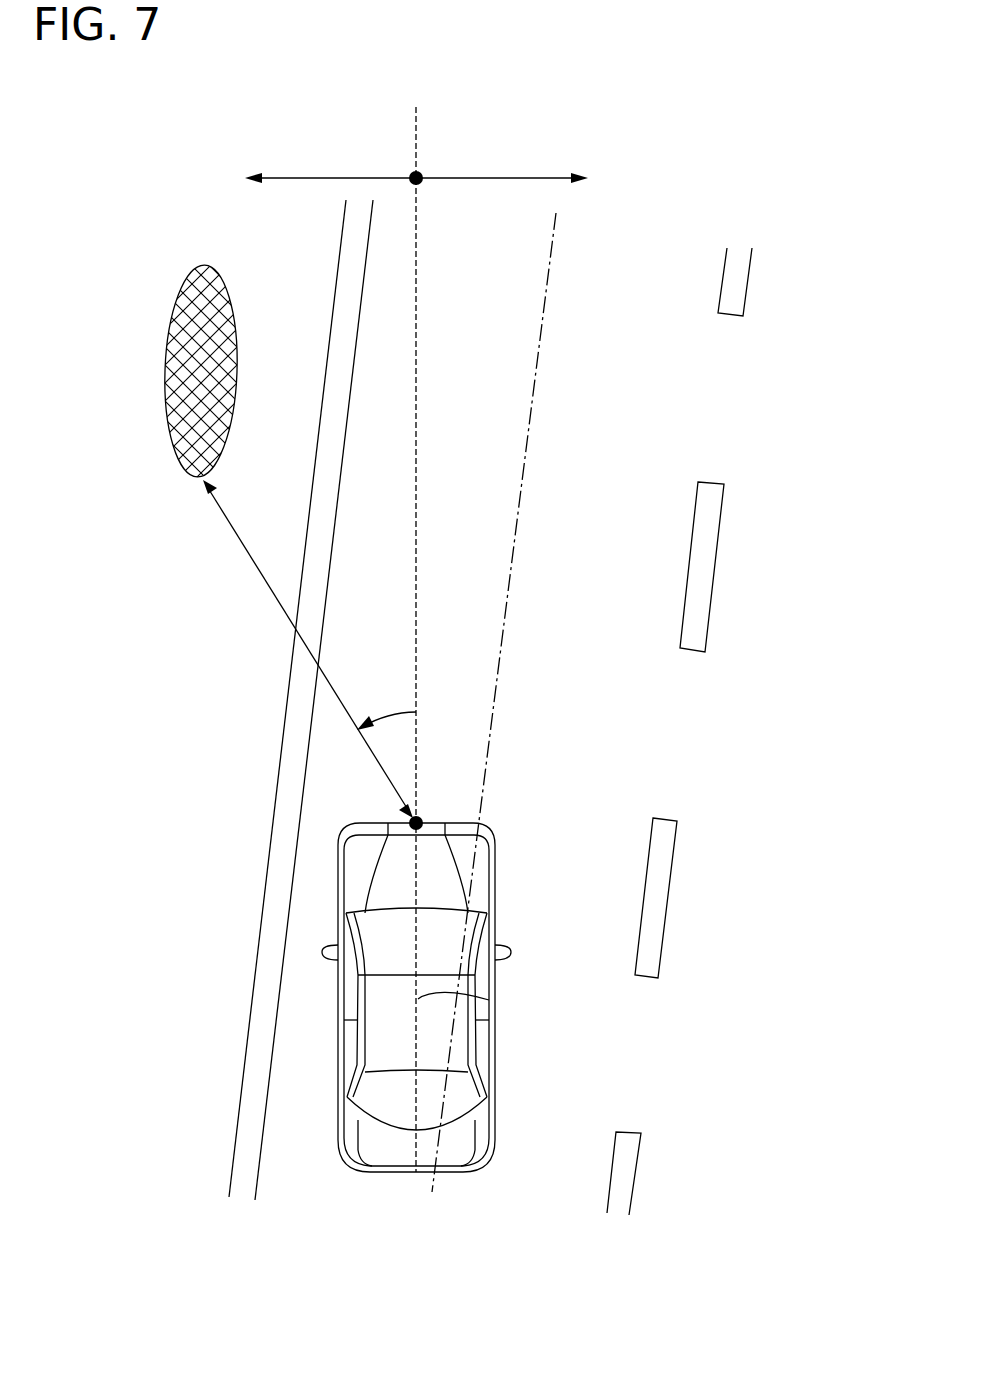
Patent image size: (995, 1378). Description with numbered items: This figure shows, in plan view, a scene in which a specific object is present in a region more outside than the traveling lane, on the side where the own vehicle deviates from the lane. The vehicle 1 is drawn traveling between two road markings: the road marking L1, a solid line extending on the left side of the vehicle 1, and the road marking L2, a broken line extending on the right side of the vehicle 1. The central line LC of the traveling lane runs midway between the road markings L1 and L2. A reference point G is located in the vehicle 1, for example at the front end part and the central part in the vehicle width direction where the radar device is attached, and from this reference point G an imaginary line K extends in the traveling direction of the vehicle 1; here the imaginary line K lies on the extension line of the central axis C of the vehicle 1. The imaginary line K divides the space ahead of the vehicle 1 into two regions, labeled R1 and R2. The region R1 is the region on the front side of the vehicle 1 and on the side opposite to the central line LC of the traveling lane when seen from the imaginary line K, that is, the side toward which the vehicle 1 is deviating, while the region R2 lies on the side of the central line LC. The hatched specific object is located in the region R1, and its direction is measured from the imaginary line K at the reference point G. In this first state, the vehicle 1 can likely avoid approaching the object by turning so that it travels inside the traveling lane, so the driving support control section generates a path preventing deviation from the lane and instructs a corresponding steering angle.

The vehicle 1 is at (497, 1127).
The central axis C is at (497, 1000).
The reference point G is at (423, 818).
The imaginary line K is at (416, 566).
The central line of traveling lane LC is at (498, 684).
The road marking L1 is at (258, 957).
The road marking L2 is at (717, 563).
The region outside traveling lane R1 is at (330, 163).
The region R2 is at (498, 164).